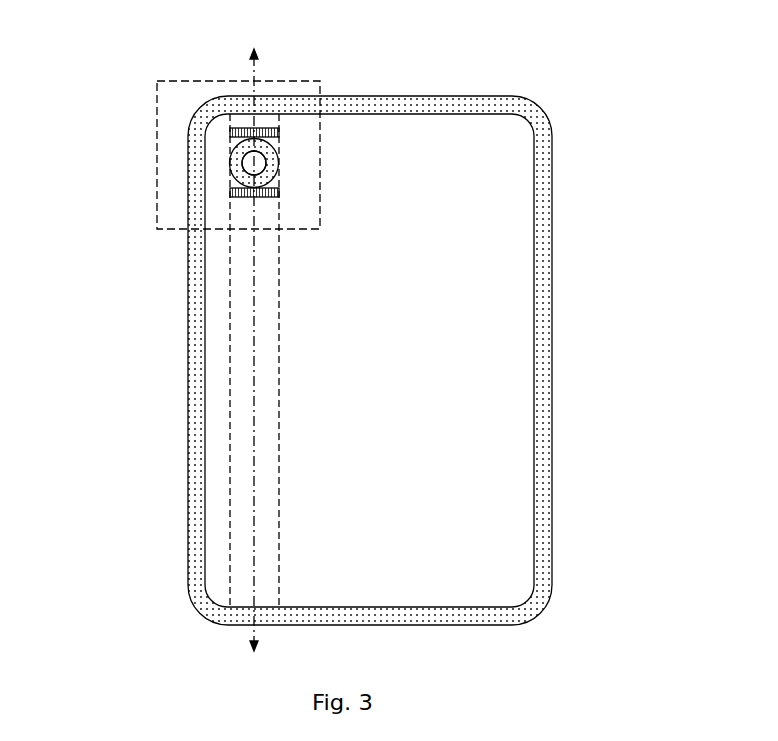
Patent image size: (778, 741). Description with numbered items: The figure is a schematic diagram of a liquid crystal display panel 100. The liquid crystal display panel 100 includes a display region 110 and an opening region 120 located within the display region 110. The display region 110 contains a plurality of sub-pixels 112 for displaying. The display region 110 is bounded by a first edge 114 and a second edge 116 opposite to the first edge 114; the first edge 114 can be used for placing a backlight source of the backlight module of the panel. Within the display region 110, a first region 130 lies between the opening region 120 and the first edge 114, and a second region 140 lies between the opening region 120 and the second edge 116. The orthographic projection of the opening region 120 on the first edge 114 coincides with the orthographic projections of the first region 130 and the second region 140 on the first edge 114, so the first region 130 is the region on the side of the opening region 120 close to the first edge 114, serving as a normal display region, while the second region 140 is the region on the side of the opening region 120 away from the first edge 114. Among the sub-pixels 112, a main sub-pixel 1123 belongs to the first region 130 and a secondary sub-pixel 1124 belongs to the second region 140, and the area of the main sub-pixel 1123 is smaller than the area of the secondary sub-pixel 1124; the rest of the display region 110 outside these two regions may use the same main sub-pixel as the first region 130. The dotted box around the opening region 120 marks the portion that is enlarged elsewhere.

The liquid crystal display panel 100 is at (341, 348).
The display region 110 is at (403, 357).
The sub-pixels 112 is at (172, 234).
The main sub-pixel 1123 is at (247, 143).
The secondary sub-pixel 1124 is at (235, 158).
The first edge 114 is at (370, 607).
The second edge 116 is at (370, 113).
The opening region 120 is at (206, 193).
The first region 130 is at (254, 215).
The second region 140 is at (247, 118).